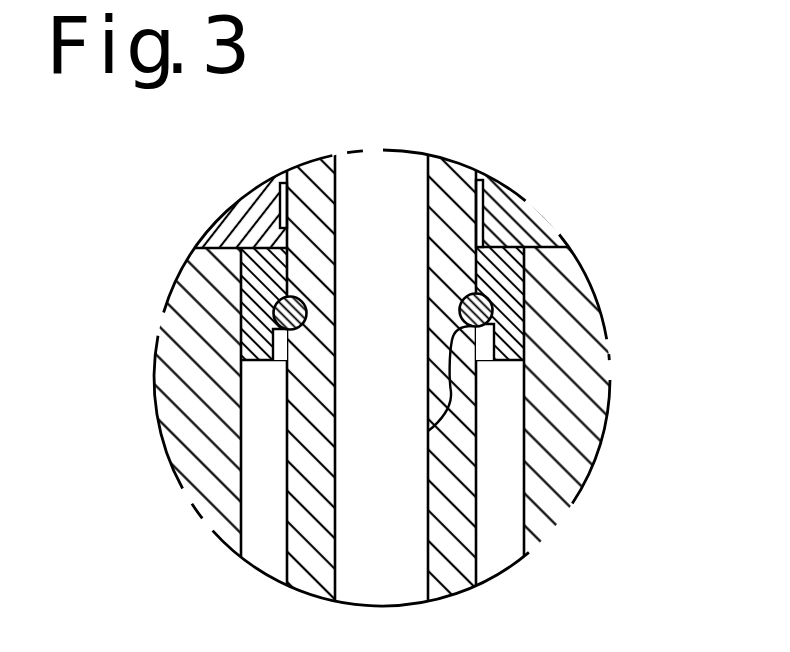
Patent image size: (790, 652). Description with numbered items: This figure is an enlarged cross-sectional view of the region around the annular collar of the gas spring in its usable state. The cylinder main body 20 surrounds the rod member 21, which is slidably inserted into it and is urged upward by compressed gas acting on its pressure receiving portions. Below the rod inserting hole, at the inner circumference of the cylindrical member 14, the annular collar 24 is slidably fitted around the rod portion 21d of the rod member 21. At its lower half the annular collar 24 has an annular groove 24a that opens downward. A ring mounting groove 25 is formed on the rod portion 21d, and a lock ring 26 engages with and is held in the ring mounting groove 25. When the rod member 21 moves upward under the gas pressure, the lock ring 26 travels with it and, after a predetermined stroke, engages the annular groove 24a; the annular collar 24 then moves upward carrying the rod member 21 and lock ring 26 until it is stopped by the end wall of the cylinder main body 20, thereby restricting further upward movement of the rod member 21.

The cylindrical member 14 is at (573, 462).
The cylinder main body 20 is at (520, 212).
The rod member 21 is at (388, 352).
The rod portion 21d is at (310, 460).
The annular collar 24 is at (308, 315).
The annular groove 24a is at (287, 332).
The ring mounting groove 25 is at (493, 307).
The lock ring 26 is at (428, 431).